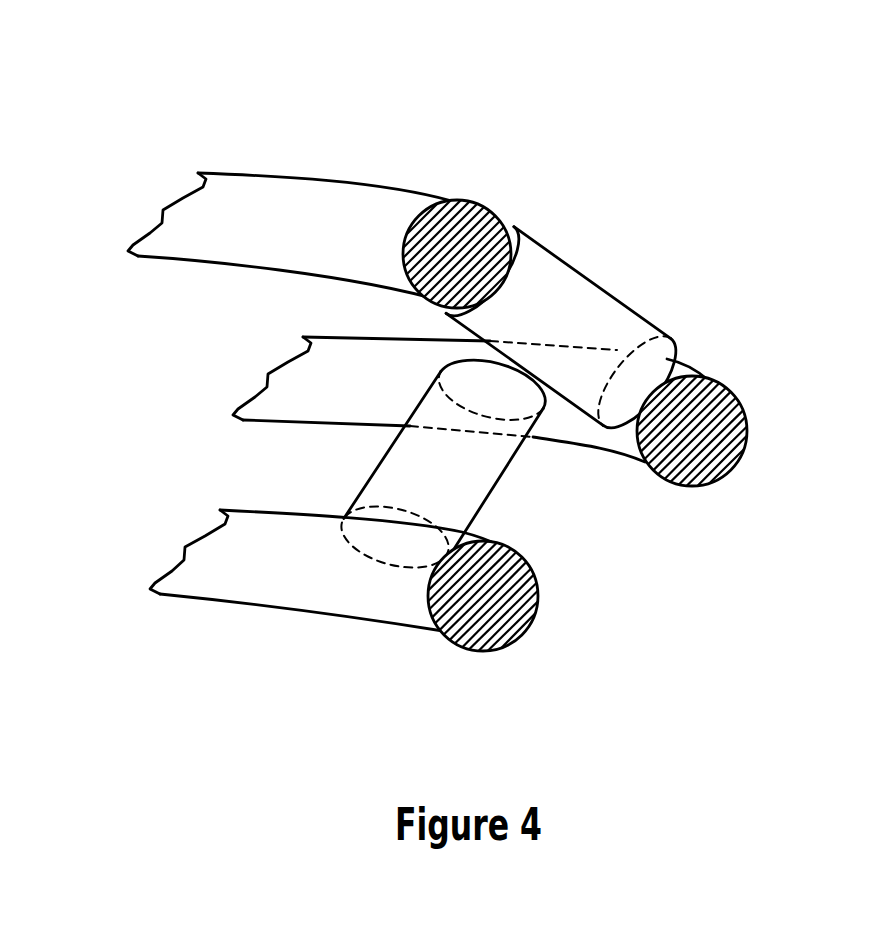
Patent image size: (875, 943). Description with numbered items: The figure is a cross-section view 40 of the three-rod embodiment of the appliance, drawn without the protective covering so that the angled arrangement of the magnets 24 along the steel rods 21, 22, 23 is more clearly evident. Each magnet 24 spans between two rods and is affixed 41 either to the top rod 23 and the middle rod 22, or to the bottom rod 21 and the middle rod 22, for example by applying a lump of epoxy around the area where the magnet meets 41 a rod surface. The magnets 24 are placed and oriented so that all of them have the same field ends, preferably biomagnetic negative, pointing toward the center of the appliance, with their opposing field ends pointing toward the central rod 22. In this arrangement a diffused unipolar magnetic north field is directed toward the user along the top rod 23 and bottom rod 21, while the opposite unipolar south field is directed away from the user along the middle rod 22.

The cross-section view 40 is at (791, 151).
The affixing point 41 is at (508, 215).
The bottom rod 21 is at (260, 580).
The middle rod 22 is at (731, 390).
The top rod 23 is at (229, 244).
The magnet 24 is at (592, 308).